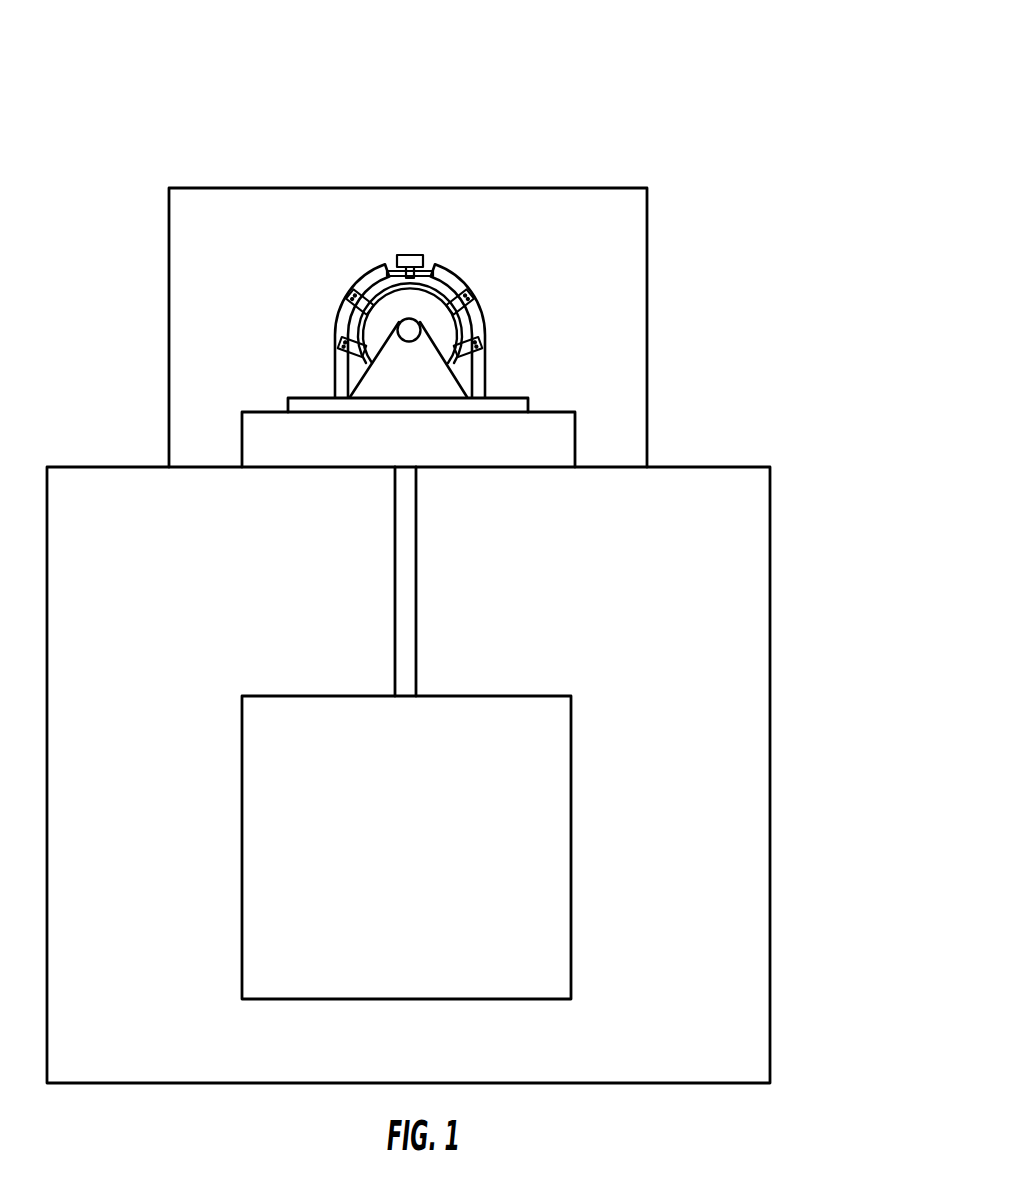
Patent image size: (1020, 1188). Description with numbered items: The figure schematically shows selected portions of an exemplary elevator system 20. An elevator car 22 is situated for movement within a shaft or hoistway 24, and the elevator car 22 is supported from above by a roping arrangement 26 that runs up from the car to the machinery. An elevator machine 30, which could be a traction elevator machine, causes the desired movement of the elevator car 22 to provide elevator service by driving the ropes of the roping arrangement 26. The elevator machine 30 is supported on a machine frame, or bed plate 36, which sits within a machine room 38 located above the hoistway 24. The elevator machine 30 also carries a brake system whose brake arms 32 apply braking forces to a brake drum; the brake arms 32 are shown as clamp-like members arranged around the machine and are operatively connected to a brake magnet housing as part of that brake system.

The elevator system 20 is at (474, 565).
The elevator car 22 is at (549, 847).
The hoistway 24 is at (474, 775).
The roping arrangement 26 is at (415, 572).
The elevator machine 30 is at (523, 326).
The brake arms 32 is at (412, 202).
The bed plate 36 is at (543, 440).
The machine room 38 is at (477, 327).